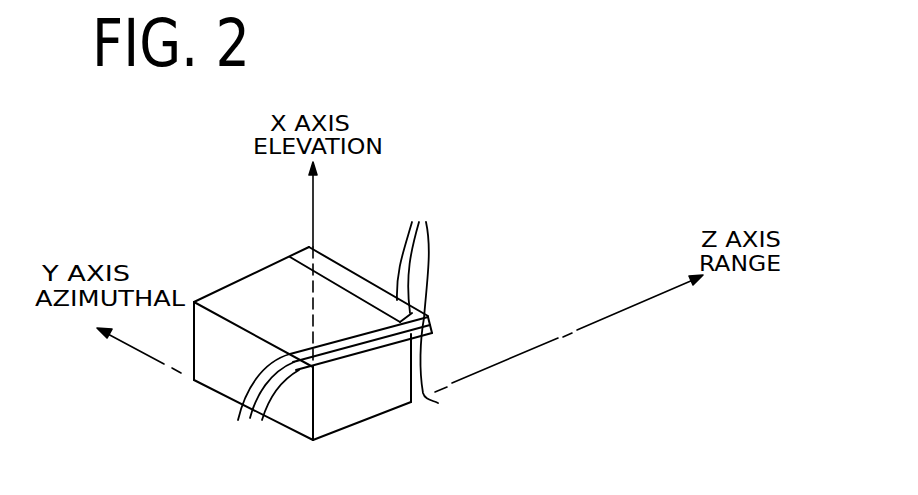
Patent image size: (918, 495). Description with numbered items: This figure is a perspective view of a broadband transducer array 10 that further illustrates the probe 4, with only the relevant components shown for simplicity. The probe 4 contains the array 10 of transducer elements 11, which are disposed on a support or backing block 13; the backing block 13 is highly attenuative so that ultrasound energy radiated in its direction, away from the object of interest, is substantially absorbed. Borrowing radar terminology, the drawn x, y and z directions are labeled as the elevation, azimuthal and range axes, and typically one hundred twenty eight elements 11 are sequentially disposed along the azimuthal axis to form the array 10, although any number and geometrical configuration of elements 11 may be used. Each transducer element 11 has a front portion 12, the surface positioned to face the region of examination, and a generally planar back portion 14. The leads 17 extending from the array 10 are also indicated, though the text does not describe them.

The probe 4 is at (158, 215).
The broadband transducer array 10 is at (294, 242).
The transducer elements 11 is at (413, 259).
The front portion 12 is at (438, 404).
The backing block 13 is at (233, 281).
The back portion 14 is at (411, 385).
The lower leads 17 is at (273, 423).